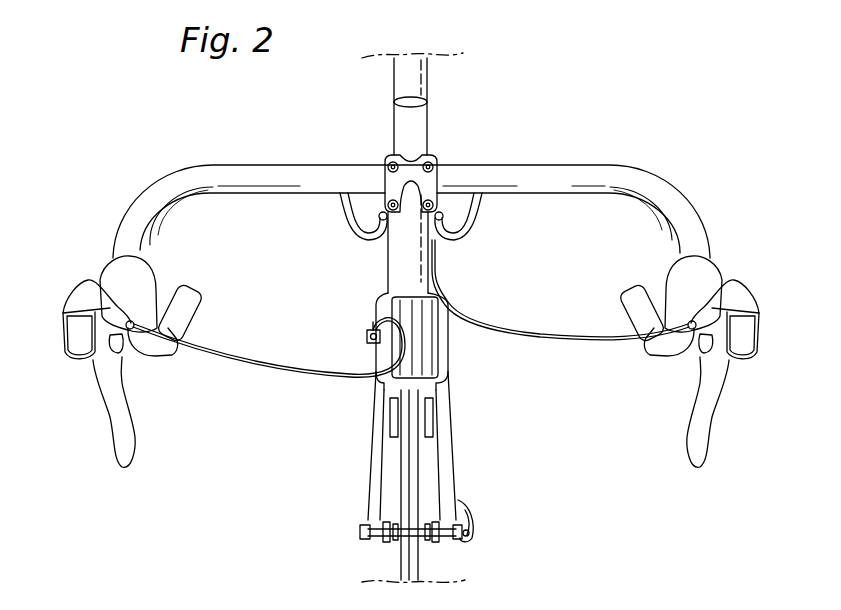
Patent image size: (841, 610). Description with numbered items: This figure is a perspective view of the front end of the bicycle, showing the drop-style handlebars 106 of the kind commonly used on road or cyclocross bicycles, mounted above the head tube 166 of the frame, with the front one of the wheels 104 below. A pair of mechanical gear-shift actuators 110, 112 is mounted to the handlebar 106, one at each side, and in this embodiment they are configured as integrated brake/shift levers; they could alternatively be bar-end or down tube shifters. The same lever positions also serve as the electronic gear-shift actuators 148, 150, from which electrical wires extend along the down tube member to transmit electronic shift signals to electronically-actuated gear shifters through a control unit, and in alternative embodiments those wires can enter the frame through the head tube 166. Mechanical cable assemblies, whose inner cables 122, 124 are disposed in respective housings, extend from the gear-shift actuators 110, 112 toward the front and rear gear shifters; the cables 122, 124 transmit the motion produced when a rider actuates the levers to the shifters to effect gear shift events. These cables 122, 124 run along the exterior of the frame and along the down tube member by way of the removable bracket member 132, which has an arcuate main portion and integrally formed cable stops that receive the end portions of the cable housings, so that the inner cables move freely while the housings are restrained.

The handlebars 106 is at (555, 168).
The head tube 166 is at (390, 248).
The removable bracket member 132 is at (382, 214).
The internal cable 124 is at (360, 220).
The internal cable 122 is at (462, 223).
The wheel 104 is at (420, 465).
The mechanical gear-shift actuator 112 is at (108, 348).
The electronic gear-shift actuator 150 is at (75, 293).
The mechanical gear-shift actuator 110 is at (710, 317).
The electronic gear-shift actuator 148 is at (737, 283).